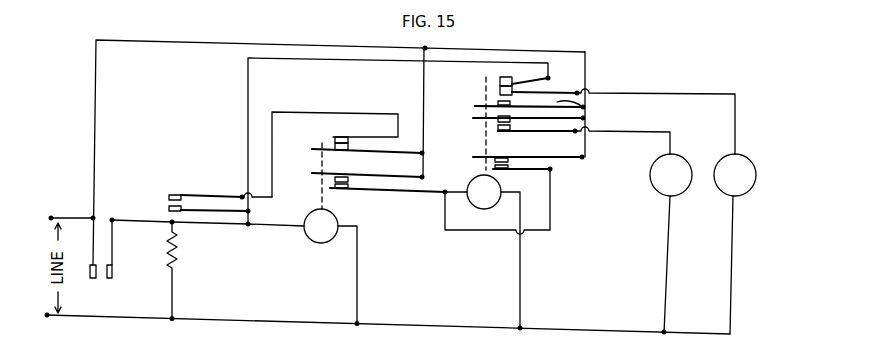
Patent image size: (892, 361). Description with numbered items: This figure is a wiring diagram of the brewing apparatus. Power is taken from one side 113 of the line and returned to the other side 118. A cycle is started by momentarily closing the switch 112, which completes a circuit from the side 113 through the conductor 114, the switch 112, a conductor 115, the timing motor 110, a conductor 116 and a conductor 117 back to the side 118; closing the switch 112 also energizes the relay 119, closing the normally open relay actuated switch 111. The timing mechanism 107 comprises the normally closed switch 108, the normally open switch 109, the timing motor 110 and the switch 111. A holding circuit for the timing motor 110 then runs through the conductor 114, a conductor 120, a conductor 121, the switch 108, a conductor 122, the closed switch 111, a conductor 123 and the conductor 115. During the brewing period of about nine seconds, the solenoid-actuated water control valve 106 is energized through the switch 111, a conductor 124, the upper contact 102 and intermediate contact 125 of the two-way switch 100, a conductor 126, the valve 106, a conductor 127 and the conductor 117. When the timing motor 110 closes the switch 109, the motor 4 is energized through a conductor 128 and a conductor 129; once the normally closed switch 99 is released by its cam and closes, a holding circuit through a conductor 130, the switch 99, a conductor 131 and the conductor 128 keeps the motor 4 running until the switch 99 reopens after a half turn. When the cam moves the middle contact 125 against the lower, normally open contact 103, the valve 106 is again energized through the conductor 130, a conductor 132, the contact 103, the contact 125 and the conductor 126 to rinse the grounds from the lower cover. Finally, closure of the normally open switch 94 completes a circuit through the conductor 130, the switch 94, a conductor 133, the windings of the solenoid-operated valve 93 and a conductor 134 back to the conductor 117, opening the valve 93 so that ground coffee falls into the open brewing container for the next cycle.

The motor 4 is at (480, 211).
The solenoid-operated valve 93 is at (653, 191).
The normally open switch 94 is at (498, 127).
The normally closed switch 99 is at (493, 163).
The two-way switch 100 is at (500, 88).
The normally closed contact 102 is at (506, 77).
The normally open contact 103 is at (498, 104).
The solenoid-actuated valve 106 is at (745, 187).
The timing mechanism 107 is at (297, 242).
The normally closed switch 108 is at (333, 140).
The normally open switch 109 is at (325, 178).
The timing motor 110 is at (325, 243).
The relay actuated switch 111 is at (168, 196).
The switch 112 is at (108, 279).
The side of source of electric power 113 is at (51, 218).
The conductor 114 is at (75, 217).
The conductor 115 is at (126, 221).
The conductor 116 is at (358, 280).
The conductor 117 is at (258, 324).
The other side of source of electric power 118 is at (46, 318).
The relay 119 is at (178, 250).
The conductor 120 is at (193, 43).
The conductor 121 is at (421, 84).
The conductor 122 is at (340, 112).
The conductor 123 is at (250, 222).
The conductor 124 is at (249, 115).
The intermediate contact 125 is at (548, 72).
The conductor 126 is at (630, 93).
The conductor 127 is at (732, 262).
The conductor 128 is at (398, 193).
The conductor 129 is at (521, 278).
The conductor 130 is at (588, 67).
The conductor 131 is at (551, 192).
The conductor 132 is at (586, 104).
The conductor 133 is at (648, 131).
The conductor 134 is at (668, 250).